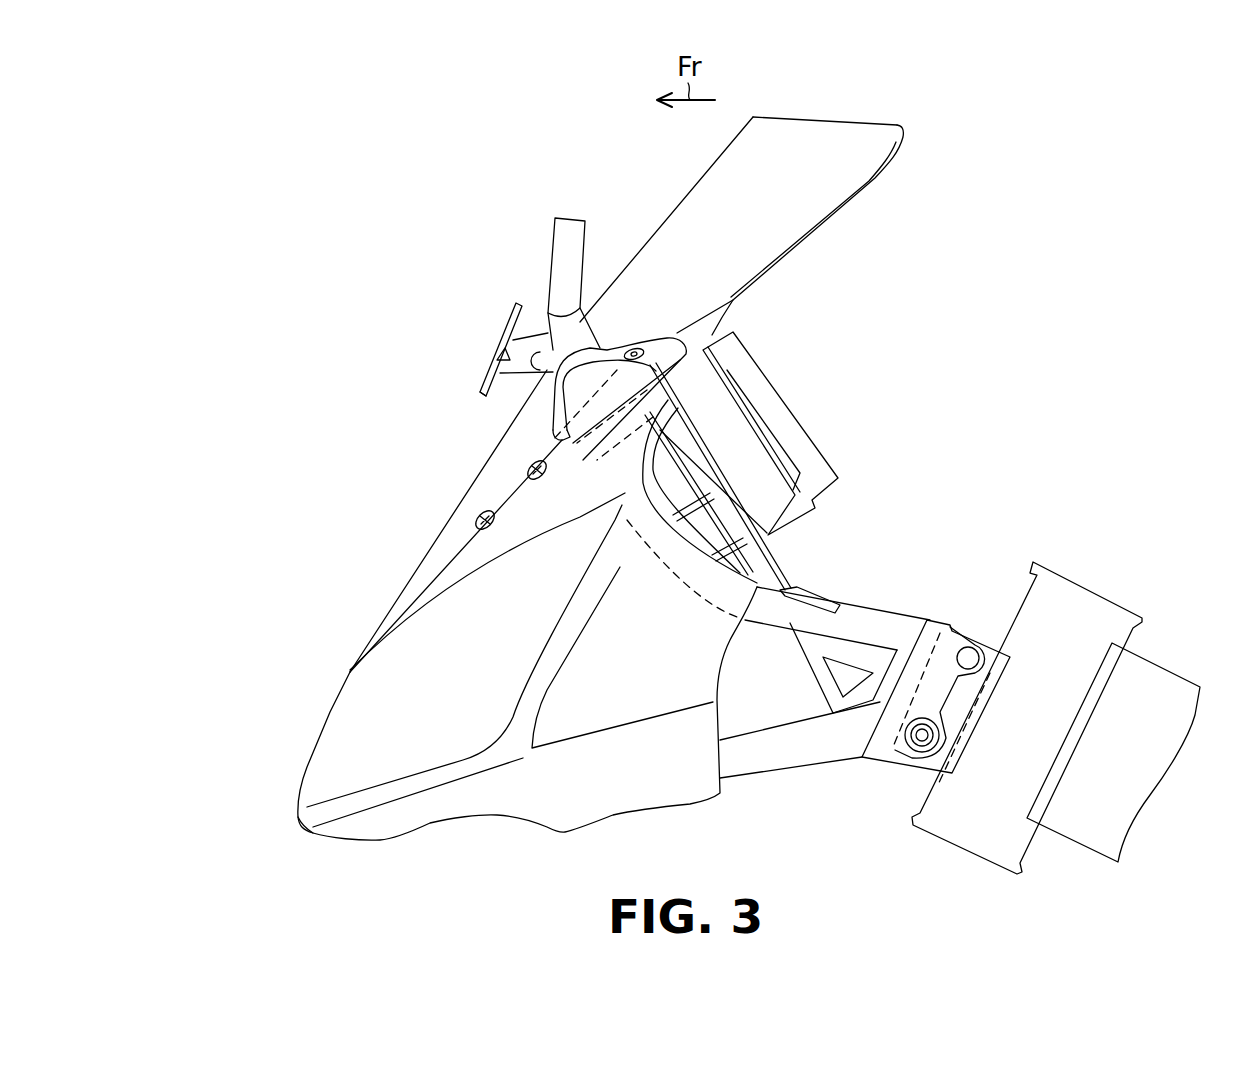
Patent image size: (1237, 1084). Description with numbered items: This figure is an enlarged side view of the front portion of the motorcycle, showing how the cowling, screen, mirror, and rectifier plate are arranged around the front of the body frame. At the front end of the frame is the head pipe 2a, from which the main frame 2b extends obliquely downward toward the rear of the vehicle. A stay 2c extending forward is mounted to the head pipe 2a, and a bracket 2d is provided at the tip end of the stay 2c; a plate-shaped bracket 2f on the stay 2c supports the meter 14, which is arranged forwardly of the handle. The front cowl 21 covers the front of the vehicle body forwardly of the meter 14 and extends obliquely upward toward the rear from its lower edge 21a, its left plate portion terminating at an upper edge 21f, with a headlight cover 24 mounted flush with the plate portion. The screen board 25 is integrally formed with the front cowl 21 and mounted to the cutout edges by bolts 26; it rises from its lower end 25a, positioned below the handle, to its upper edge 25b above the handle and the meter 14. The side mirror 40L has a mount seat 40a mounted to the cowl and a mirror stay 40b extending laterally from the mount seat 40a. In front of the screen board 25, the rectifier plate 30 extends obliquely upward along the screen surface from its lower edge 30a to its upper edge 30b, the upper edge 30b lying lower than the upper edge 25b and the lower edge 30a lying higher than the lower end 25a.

The head pipe 2a is at (1025, 625).
The main frame 2b is at (1153, 670).
The stay 2c is at (866, 620).
The bracket 2d is at (610, 375).
The plate-shaped bracket 2f is at (760, 555).
The meter 14 is at (760, 382).
The front cowl 21 is at (465, 552).
The lower edge 21a is at (305, 820).
The upper edge 21f is at (670, 410).
The headlight cover 24 is at (355, 717).
The screen board 25 is at (705, 188).
The lower end 25a is at (385, 608).
The upper edge 25b is at (807, 117).
The bolt 26 is at (527, 470).
The rectifier plate 30 is at (498, 353).
The lower edge 30a is at (480, 392).
The upper edge 30b is at (518, 305).
The mount seat 40a is at (553, 410).
The mirror stay 40b is at (577, 248).
The side mirror 40L is at (547, 268).